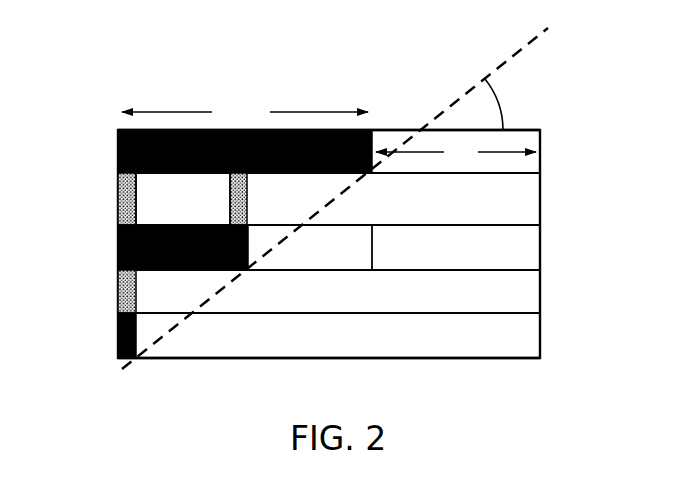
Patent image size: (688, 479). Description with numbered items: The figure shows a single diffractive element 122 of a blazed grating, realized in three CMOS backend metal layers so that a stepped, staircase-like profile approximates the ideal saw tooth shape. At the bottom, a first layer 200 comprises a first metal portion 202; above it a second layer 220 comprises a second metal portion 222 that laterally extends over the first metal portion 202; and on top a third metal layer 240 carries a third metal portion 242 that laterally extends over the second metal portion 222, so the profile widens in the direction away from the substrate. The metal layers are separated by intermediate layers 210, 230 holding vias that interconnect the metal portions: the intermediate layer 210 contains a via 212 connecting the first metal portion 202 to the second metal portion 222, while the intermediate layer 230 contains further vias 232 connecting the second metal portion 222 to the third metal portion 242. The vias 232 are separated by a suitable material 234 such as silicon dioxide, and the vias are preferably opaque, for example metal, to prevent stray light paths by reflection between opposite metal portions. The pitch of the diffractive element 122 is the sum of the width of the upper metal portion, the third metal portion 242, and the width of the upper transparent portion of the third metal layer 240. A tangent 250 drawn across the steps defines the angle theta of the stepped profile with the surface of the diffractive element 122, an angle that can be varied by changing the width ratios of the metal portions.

The diffractive element 122 is at (311, 392).
The first layer 200 is at (530, 348).
The first metal portion 202 is at (118, 339).
The intermediate layer 210 is at (530, 300).
The via 212 is at (118, 291).
The second layer 220 is at (530, 255).
The second metal portion 222 is at (118, 242).
The intermediate layer 230 is at (530, 208).
The vias 232 is at (118, 194).
The material separating the vias 234 is at (158, 211).
The third metal layer 240 is at (530, 163).
The third metal portion 242 is at (118, 152).
The tangent 250 is at (548, 30).